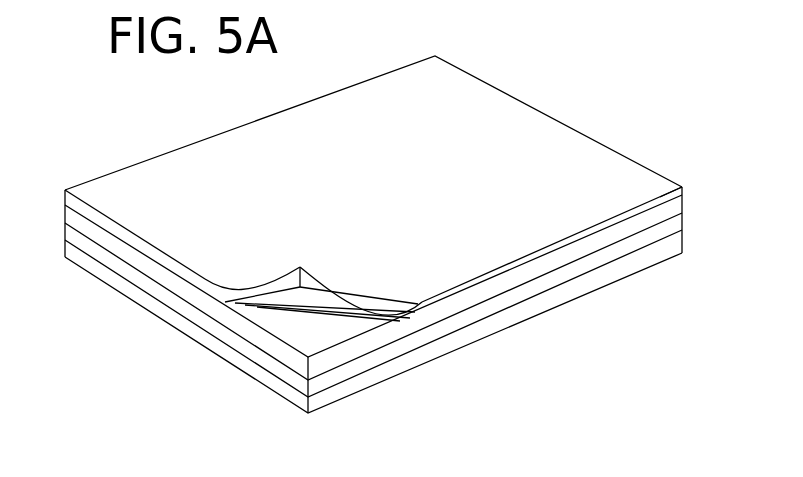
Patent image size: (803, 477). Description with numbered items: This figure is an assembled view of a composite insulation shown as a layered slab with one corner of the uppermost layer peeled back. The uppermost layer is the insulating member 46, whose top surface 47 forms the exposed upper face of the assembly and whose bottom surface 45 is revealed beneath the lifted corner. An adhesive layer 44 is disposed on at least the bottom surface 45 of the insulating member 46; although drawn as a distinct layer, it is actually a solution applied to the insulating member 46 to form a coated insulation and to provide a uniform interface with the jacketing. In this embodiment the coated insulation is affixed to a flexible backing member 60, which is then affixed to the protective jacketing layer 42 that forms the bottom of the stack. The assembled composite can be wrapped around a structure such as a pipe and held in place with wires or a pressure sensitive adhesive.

The protective jacketing layer 42 is at (572, 292).
The adhesive layer 44 is at (665, 215).
The bottom surface 45 is at (292, 308).
The insulating member 46 is at (683, 187).
The top surface 47 is at (533, 130).
The flexible backing member 60 is at (657, 236).